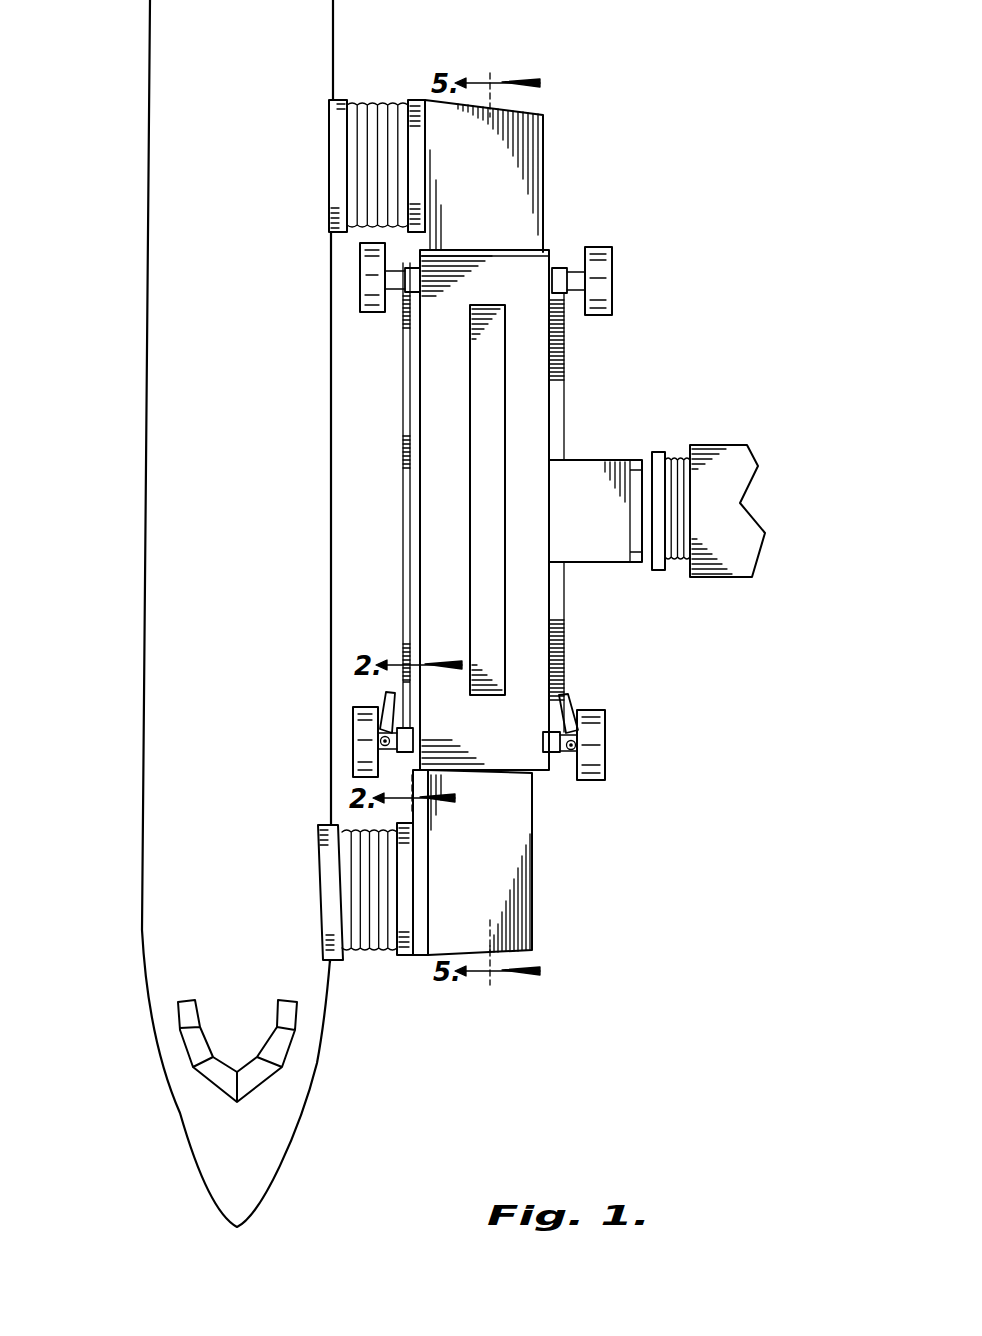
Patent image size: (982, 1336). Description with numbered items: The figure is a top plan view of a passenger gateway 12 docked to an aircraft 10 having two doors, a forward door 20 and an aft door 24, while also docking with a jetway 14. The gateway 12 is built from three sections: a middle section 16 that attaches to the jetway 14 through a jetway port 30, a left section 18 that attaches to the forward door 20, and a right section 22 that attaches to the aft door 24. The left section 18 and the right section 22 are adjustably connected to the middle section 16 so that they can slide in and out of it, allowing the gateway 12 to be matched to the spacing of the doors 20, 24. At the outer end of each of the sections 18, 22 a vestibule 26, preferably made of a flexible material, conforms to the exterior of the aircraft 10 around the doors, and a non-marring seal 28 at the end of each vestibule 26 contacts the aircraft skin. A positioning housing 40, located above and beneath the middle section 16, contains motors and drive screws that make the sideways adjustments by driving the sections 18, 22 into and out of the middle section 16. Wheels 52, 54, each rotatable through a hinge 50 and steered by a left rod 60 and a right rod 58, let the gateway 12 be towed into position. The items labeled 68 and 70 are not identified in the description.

The aircraft 10 is at (143, 978).
The passenger gateway 12 is at (774, 298).
The jetway 14 is at (717, 445).
The middle section 16 is at (545, 772).
The left section 18 is at (532, 880).
The forward door 20 is at (333, 962).
The right section 22 is at (543, 175).
The aft door 24 is at (329, 118).
The vestibule 26 is at (384, 103).
The non-marring seal 28 is at (329, 192).
The jetway port 30 is at (637, 460).
The positioning housing 40 is at (471, 413).
The hinge 50 is at (660, 776).
The wheel 52 is at (353, 742).
The wheel 54 is at (605, 728).
The right rod 58 is at (573, 695).
The left rod 60 is at (386, 693).
The upper left knob 68 is at (373, 312).
The upper right knob 70 is at (612, 277).